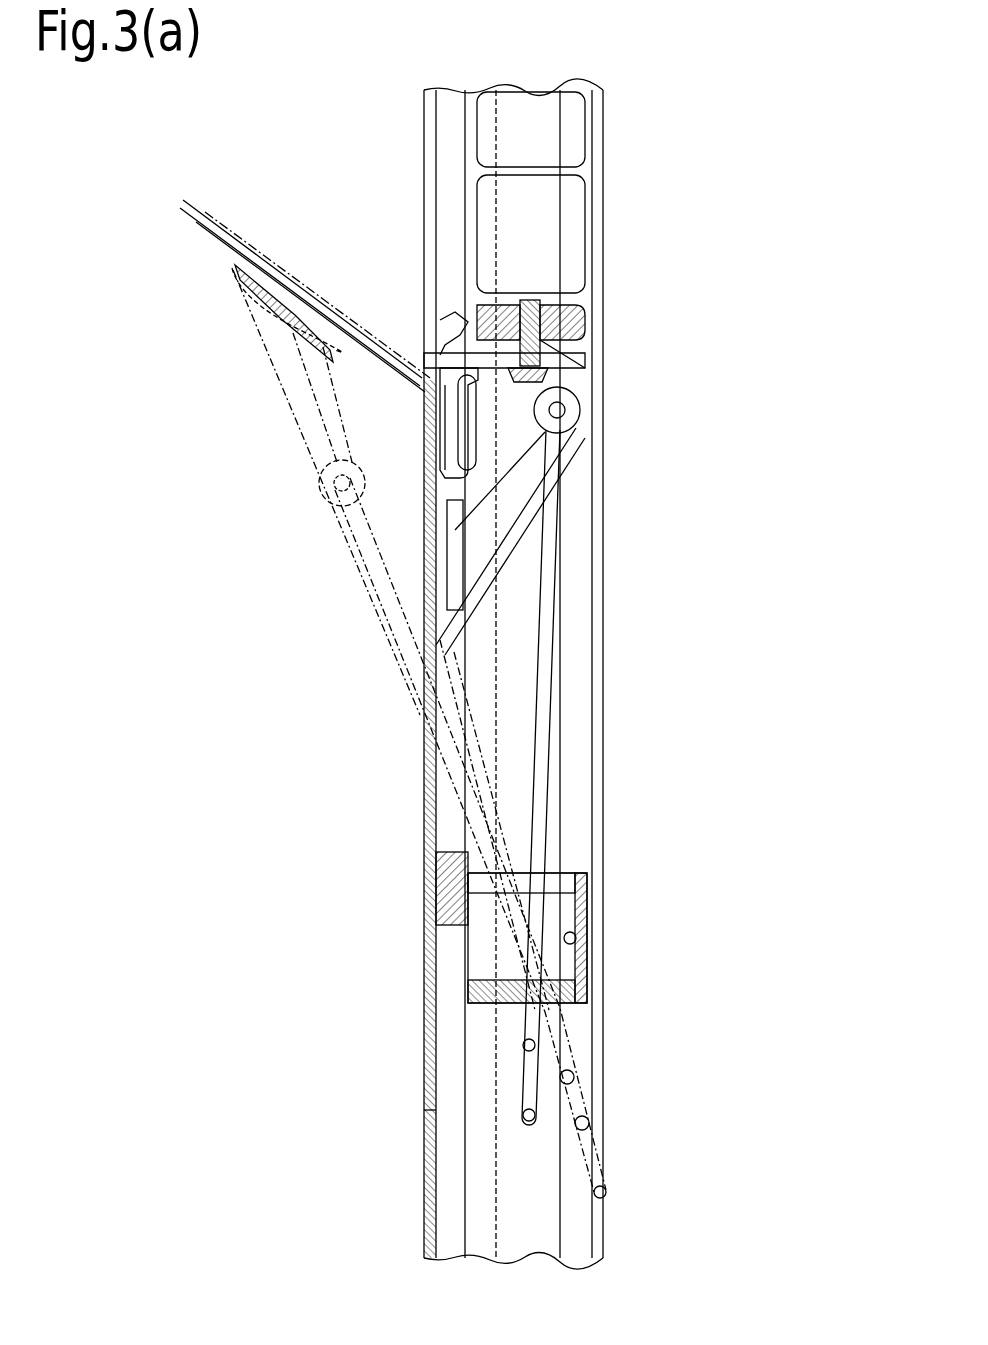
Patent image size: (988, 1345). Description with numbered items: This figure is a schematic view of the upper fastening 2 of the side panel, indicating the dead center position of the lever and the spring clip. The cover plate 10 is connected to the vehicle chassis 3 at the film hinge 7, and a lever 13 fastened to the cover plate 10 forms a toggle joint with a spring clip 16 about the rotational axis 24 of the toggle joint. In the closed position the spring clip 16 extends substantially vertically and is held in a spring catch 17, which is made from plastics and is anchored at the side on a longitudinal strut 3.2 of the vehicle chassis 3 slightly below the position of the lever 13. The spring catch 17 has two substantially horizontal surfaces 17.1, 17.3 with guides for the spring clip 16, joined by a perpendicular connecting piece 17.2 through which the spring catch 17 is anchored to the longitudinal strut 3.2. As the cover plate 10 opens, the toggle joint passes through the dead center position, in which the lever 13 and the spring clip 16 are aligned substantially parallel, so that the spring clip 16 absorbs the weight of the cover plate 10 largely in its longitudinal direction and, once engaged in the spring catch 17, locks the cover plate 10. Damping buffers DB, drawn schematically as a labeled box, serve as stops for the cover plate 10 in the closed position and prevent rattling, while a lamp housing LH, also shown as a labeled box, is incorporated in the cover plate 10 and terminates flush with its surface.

The upper fastening 2 is at (384, 421).
The vehicle chassis 3 is at (628, 628).
The longitudinal strut 3.2 is at (592, 755).
The film hinge 7 is at (415, 357).
The cover plate 10 is at (215, 218).
The lever 13 is at (525, 493).
The spring clip 16 is at (570, 582).
The spring catch 17 is at (580, 1017).
The horizontal surface of spring catch 17.1 is at (572, 878).
The connecting piece 17.2 is at (585, 960).
The horizontal surface of spring catch 17.3 is at (575, 992).
The rotational axis of the toggle joint 24 is at (580, 410).
The damping buffers DB is at (436, 892).
The lamp housing LH is at (430, 1135).